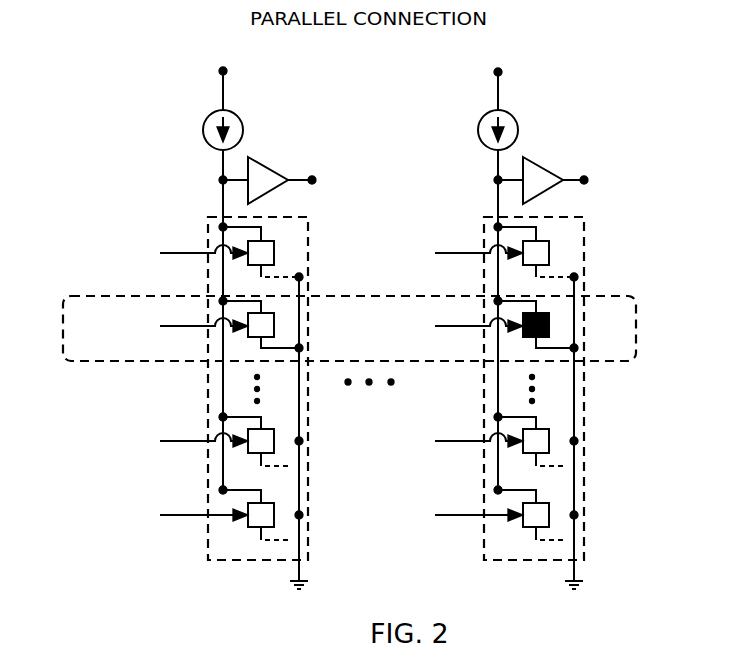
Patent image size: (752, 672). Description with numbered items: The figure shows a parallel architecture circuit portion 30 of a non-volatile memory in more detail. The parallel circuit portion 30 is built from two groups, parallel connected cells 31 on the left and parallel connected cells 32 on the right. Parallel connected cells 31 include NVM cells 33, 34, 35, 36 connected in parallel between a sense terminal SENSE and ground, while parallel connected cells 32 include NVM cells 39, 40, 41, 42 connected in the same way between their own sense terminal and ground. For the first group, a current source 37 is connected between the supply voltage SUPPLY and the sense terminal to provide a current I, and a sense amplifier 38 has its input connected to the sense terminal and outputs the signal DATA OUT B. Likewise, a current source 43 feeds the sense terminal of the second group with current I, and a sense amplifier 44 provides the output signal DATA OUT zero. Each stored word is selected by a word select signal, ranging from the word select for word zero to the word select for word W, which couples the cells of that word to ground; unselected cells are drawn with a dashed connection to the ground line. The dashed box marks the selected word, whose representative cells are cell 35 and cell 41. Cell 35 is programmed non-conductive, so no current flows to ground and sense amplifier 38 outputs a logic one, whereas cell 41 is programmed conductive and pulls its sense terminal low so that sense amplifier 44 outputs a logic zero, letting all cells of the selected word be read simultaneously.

The parallel architecture circuit portion 30 is at (289, 618).
The parallel connected cells 31 is at (243, 561).
The parallel connected cells 32 is at (529, 561).
The NVM cell 33 is at (276, 524).
The NVM cell 34 is at (276, 450).
The NVM cell 35 is at (276, 333).
The NVM cell 36 is at (276, 261).
The current source 37 is at (236, 116).
The sense amplifier 38 is at (255, 157).
The NVM cell 39 is at (551, 517).
The NVM cell 40 is at (551, 450).
The NVM cell 41 is at (551, 333).
The NVM cell 42 is at (551, 261).
The current source 43 is at (511, 116).
The sense amplifier 44 is at (528, 157).